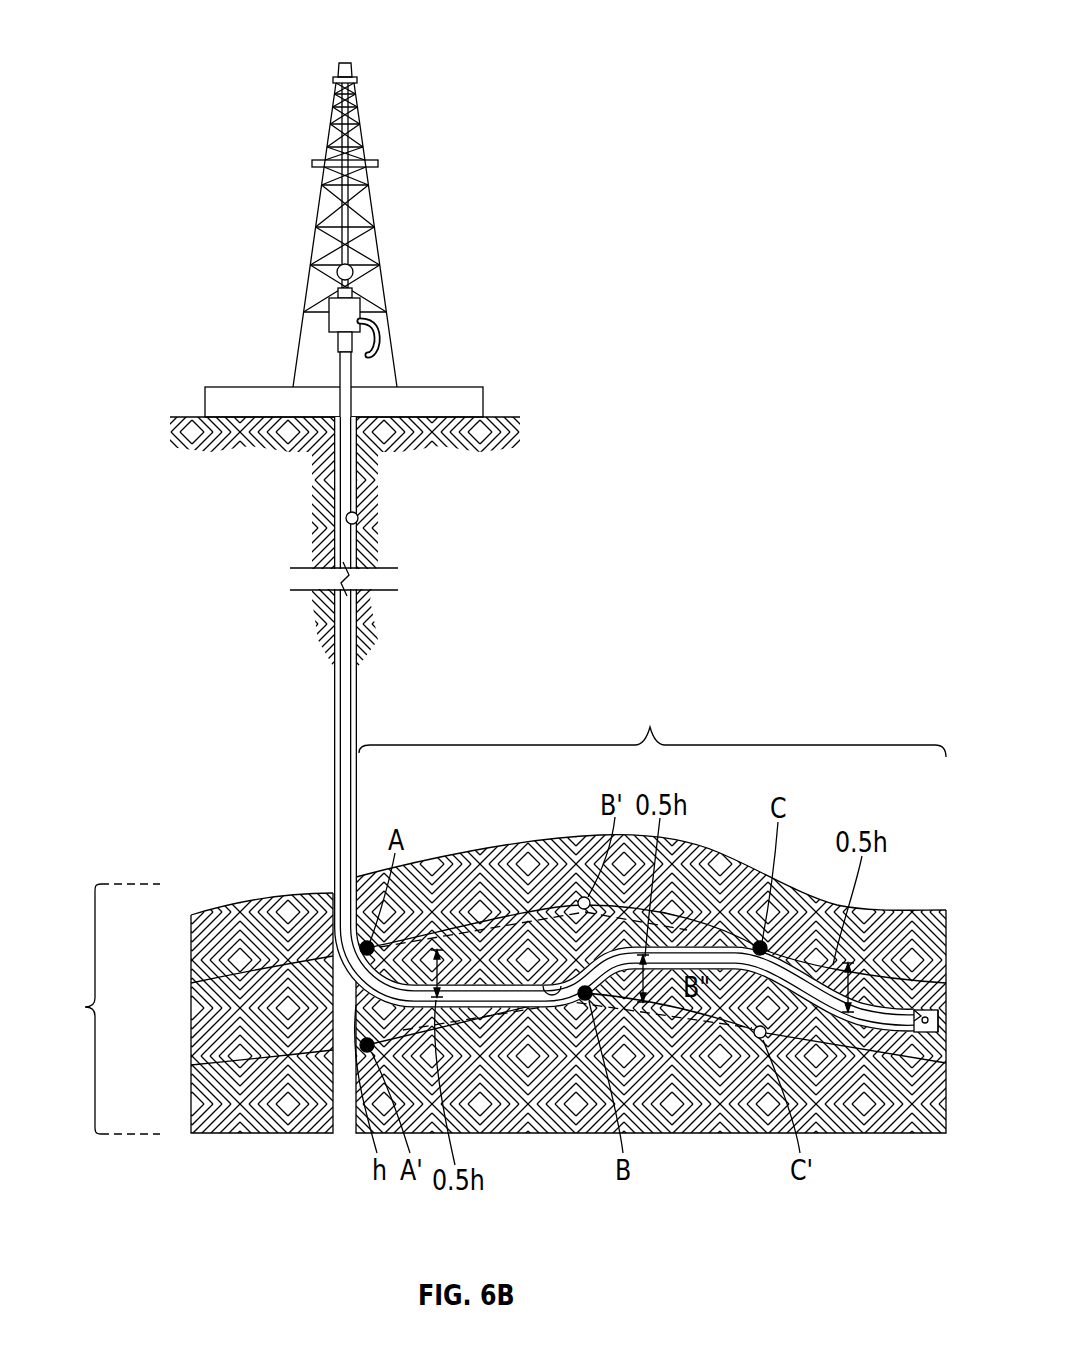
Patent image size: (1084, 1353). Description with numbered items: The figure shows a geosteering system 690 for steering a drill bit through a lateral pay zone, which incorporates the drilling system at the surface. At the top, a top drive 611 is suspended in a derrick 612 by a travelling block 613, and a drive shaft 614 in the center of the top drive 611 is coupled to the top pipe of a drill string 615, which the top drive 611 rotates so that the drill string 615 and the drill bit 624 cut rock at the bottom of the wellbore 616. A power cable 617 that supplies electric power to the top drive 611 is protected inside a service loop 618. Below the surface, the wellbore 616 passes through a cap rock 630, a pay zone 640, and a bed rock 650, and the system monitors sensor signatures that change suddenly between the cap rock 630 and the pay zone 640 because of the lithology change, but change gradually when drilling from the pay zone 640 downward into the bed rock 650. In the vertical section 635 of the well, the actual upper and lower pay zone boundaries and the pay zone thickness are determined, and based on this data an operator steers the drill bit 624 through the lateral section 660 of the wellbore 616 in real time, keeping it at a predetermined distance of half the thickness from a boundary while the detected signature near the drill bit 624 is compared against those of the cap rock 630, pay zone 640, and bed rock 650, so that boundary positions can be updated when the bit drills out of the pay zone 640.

The geosteering system 690 is at (516, 213).
The power cable 617 is at (368, 207).
The derrick 612 is at (385, 286).
The travelling block 613 is at (321, 265).
The top drive 611 is at (328, 327).
The service loop 618 is at (378, 340).
The drive shaft 614 is at (338, 343).
The wellbore 616 is at (358, 514).
The drill string 615 is at (339, 712).
The drill bit 624 is at (910, 1038).
The lateral section 660 is at (652, 724).
The cap rock 630 is at (280, 915).
The pay zone 640 is at (242, 985).
The vertical section 635 is at (95, 1009).
The bed rock 650 is at (220, 1117).